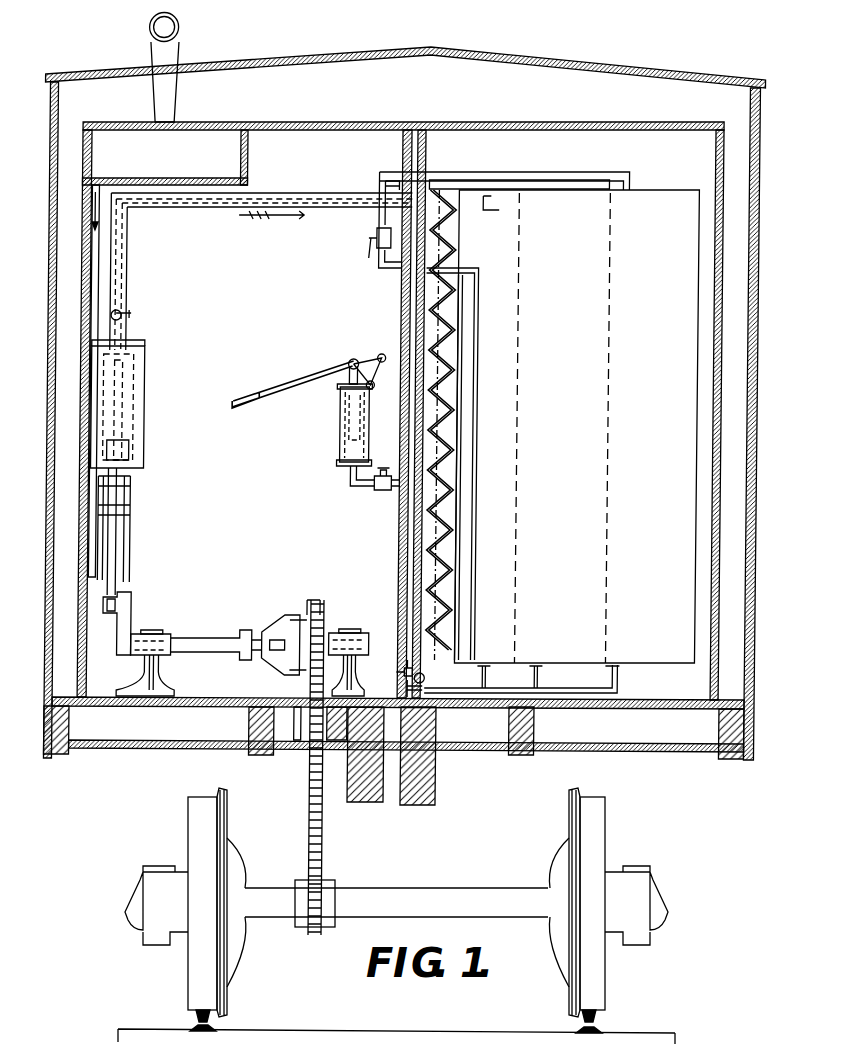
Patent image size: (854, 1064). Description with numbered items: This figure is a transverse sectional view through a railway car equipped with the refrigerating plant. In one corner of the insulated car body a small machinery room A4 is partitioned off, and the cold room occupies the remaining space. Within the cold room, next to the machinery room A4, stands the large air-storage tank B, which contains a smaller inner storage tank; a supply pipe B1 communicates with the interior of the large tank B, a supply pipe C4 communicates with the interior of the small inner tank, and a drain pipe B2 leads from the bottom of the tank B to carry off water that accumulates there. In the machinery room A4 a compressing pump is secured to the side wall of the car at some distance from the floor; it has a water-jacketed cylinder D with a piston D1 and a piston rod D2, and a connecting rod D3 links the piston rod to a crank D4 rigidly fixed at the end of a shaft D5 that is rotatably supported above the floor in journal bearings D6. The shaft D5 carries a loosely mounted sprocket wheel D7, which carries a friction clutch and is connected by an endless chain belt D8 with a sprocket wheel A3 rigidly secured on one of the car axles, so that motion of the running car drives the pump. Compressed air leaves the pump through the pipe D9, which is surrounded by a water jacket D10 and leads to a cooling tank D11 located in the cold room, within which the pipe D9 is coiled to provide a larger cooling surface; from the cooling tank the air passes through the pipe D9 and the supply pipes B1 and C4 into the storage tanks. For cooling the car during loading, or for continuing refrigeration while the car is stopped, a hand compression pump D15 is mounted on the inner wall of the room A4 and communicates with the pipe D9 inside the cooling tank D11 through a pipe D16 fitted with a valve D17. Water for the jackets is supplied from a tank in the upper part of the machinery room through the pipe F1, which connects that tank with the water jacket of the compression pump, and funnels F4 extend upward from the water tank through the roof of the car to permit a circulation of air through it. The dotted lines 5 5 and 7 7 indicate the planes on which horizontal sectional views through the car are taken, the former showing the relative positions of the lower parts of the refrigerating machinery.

The sprocket-wheel A3 is at (332, 890).
The machinery room A4 is at (402, 426).
The large air-storage tank B is at (561, 421).
The supply-pipe B1 is at (555, 158).
The drain-pipe B2 is at (548, 692).
The supply-pipe C4 is at (498, 206).
The water-jacketed cylinder D is at (128, 412).
The piston D1 is at (125, 375).
The piston-rod D2 is at (122, 452).
The connecting-rod D3 is at (117, 562).
The crank D4 is at (130, 620).
The shaft D5 is at (205, 645).
The journal-bearings D6 is at (168, 634).
The sprocket-wheel D7 is at (320, 620).
The endless chain belt D8 is at (326, 836).
The pipe D9 is at (122, 277).
The water-jacket D10 is at (124, 242).
The cooling-tank D11 is at (450, 508).
The hand compression-pump D15 is at (345, 412).
The pipe D16 is at (370, 488).
The valve D17 is at (388, 494).
The pipe F1 is at (78, 283).
The funnels F4 is at (175, 48).
The section line 5 5 is at (780, 425).
The section line 7 7 is at (775, 145).